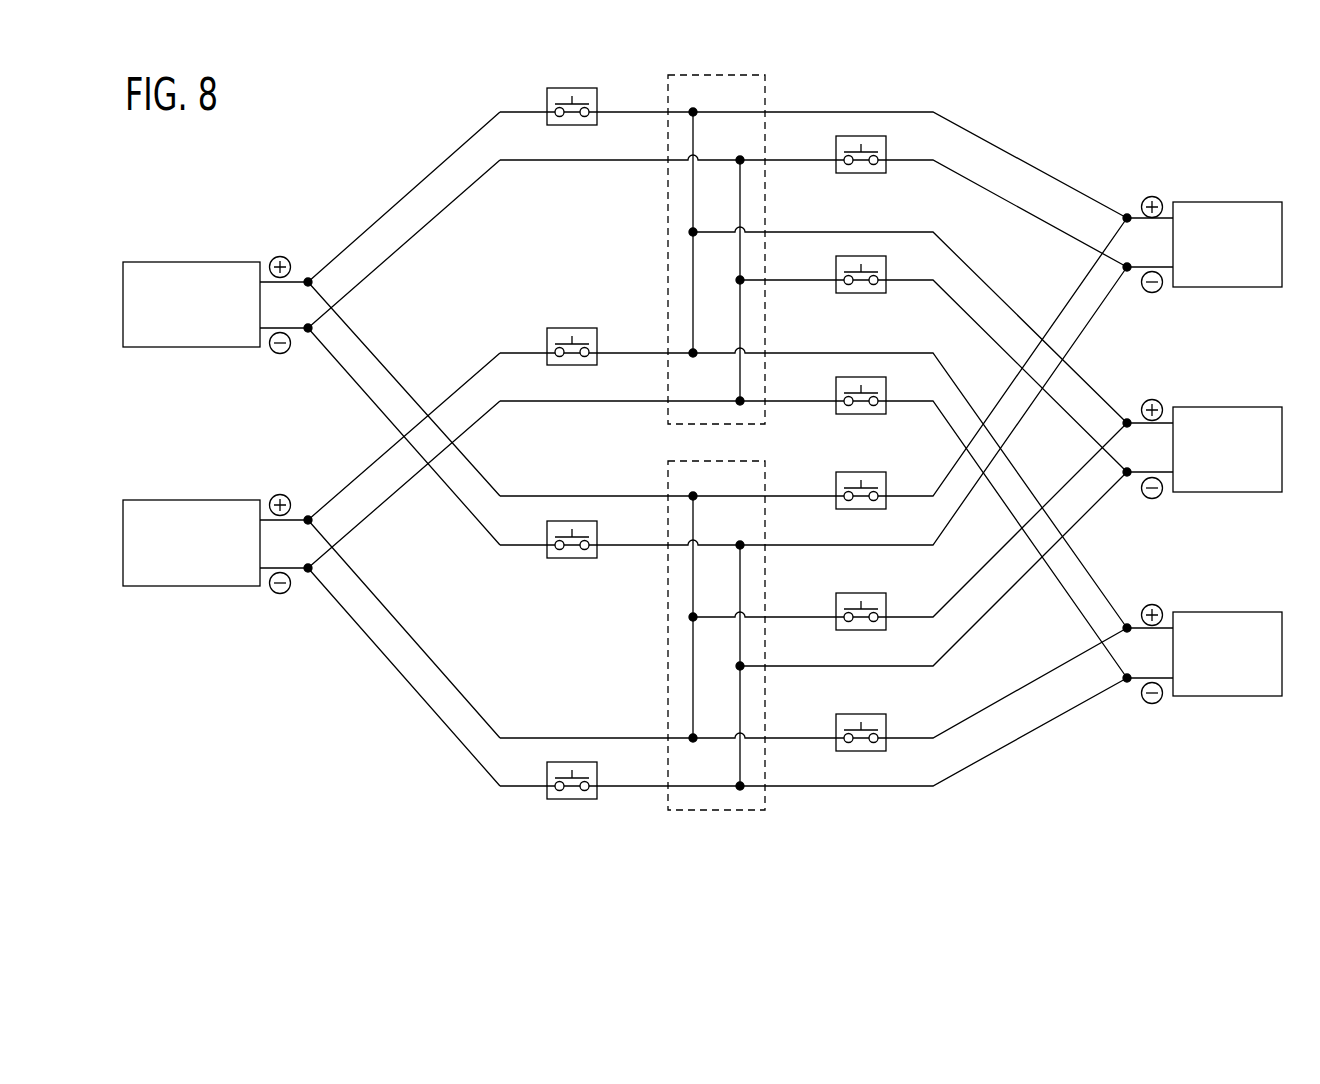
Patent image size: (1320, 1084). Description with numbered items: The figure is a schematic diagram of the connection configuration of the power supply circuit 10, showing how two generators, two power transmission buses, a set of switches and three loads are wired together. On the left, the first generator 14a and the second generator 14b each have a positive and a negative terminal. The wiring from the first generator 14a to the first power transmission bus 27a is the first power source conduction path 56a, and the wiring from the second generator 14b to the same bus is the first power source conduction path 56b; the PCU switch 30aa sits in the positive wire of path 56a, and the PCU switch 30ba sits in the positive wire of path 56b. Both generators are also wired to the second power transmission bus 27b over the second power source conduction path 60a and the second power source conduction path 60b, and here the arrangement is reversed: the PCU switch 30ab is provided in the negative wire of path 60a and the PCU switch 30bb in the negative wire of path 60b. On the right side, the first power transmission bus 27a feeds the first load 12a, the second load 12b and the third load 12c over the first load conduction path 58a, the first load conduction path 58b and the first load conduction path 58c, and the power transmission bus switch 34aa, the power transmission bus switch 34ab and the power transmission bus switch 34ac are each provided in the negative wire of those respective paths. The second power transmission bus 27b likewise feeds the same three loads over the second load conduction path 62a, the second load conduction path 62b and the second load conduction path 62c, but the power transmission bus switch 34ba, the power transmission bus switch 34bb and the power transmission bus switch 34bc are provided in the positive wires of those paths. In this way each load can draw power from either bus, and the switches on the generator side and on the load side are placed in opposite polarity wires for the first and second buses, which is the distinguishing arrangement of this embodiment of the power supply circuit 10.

The power supply circuit 10 is at (320, 140).
The first generator 14a is at (183, 260).
The second generator 14b is at (183, 500).
The first load 12a is at (1228, 201).
The second load 12b is at (1228, 406).
The third load 12c is at (1228, 611).
The PCU switch 30aa is at (565, 88).
The PCU switch 30ba is at (565, 328).
The PCU switch 30ab is at (570, 520).
The PCU switch 30bb is at (571, 761).
The power transmission bus switch 34aa is at (870, 135).
The power transmission bus switch 34ab is at (870, 255).
The power transmission bus switch 34ac is at (870, 376).
The power transmission bus switch 34ba is at (870, 471).
The power transmission bus switch 34bb is at (870, 592).
The power transmission bus switch 34bc is at (870, 713).
The first power transmission bus 27a is at (668, 243).
The second power transmission bus 27b is at (668, 628).
The first power source conduction path 56a is at (628, 161).
The first power source conduction path 56b is at (628, 402).
The second power source conduction path 60a is at (628, 546).
The second power source conduction path 60b is at (613, 785).
The first load conduction path 58a is at (787, 159).
The first load conduction path 58b is at (787, 279).
The first load conduction path 58c is at (787, 400).
The second load conduction path 62a is at (787, 544).
The second load conduction path 62b is at (787, 665).
The second load conduction path 62c is at (787, 785).